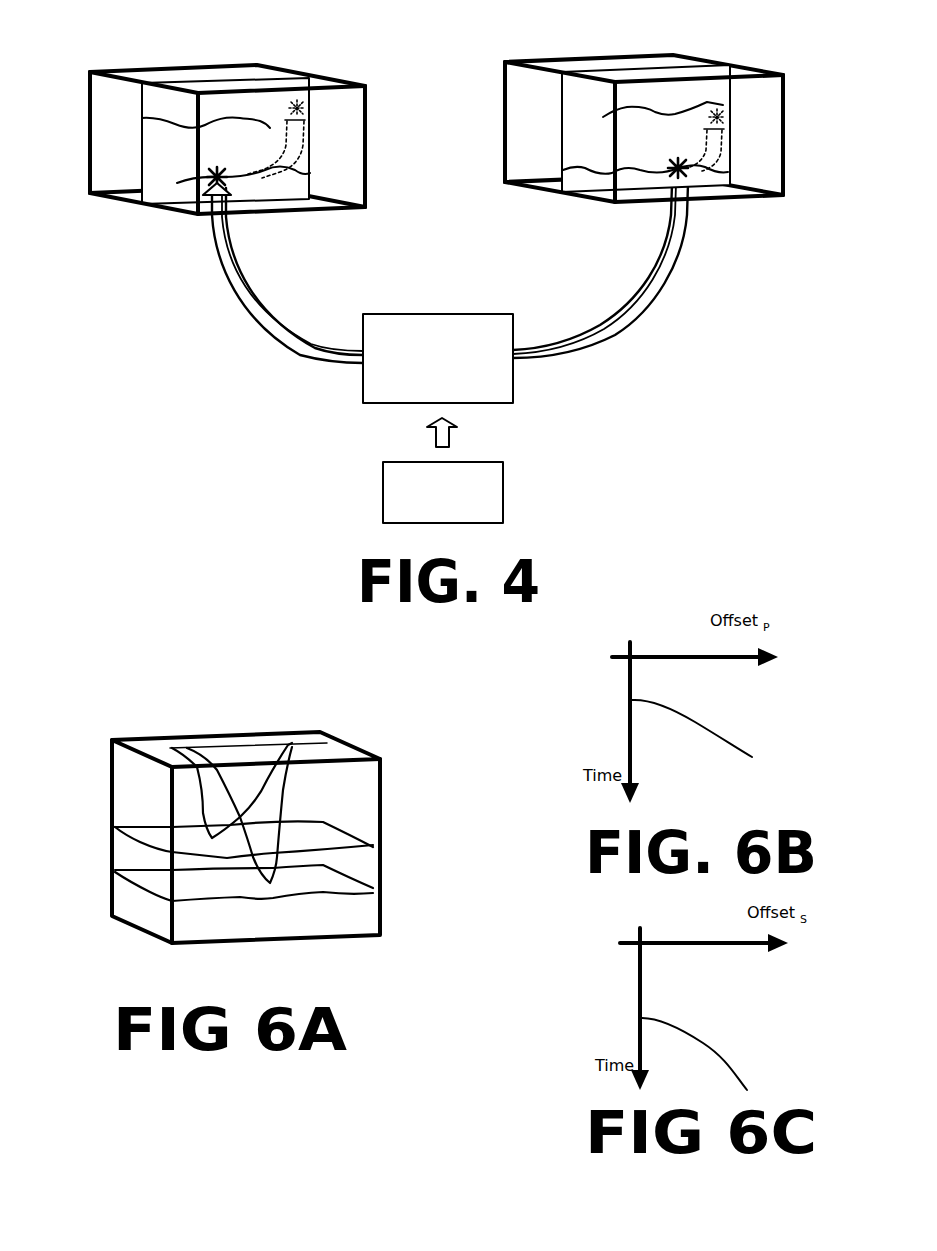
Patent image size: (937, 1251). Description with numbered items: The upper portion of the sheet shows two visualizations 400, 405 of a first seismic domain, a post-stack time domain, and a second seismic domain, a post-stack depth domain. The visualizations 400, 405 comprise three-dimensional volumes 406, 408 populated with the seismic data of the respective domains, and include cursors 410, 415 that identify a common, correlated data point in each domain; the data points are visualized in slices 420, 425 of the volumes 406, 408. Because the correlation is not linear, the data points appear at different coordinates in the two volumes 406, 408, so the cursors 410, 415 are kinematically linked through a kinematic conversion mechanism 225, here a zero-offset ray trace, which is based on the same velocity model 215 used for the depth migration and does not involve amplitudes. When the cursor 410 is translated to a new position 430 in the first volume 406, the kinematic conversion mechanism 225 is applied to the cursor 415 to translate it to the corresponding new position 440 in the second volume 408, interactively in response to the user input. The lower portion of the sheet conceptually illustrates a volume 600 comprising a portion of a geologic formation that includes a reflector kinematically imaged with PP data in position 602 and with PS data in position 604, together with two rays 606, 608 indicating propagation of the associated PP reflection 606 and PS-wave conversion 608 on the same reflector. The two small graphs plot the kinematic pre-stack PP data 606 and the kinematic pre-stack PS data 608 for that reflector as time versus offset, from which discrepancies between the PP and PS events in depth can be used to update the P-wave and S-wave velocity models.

In FIG. 4, the first visualization 400 is at (152, 33).
In FIG. 4, the second visualization 405 is at (570, 21).
In FIG. 4, the first three-dimensional volume 406 is at (90, 72).
In FIG. 4, the second three-dimensional volume 408 is at (505, 62).
In FIG. 4, the first cursor 410 is at (212, 170).
In FIG. 4, the second cursor 415 is at (678, 160).
In FIG. 4, the first slice 420 is at (157, 190).
In FIG. 4, the second slice 425 is at (577, 177).
In FIG. 4, the new cursor position in first volume 430 is at (290, 108).
In FIG. 4, the corresponding new cursor position in second volume 440 is at (725, 117).
In FIG. 4, the kinematic conversion mechanism 225 is at (433, 312).
In FIG. 4, the velocity model 215 is at (505, 488).
In FIG. 6A, the volume 600 is at (118, 714).
In FIG. 6A, the reflector position imaged with PP data 602 is at (127, 823).
In FIG. 6A, the reflector position imaged with PS data 604 is at (128, 868).
In FIG. 6A, the PP reflection ray 606 is at (197, 792).
In FIG. 6A, the PS conversion ray 608 is at (287, 795).